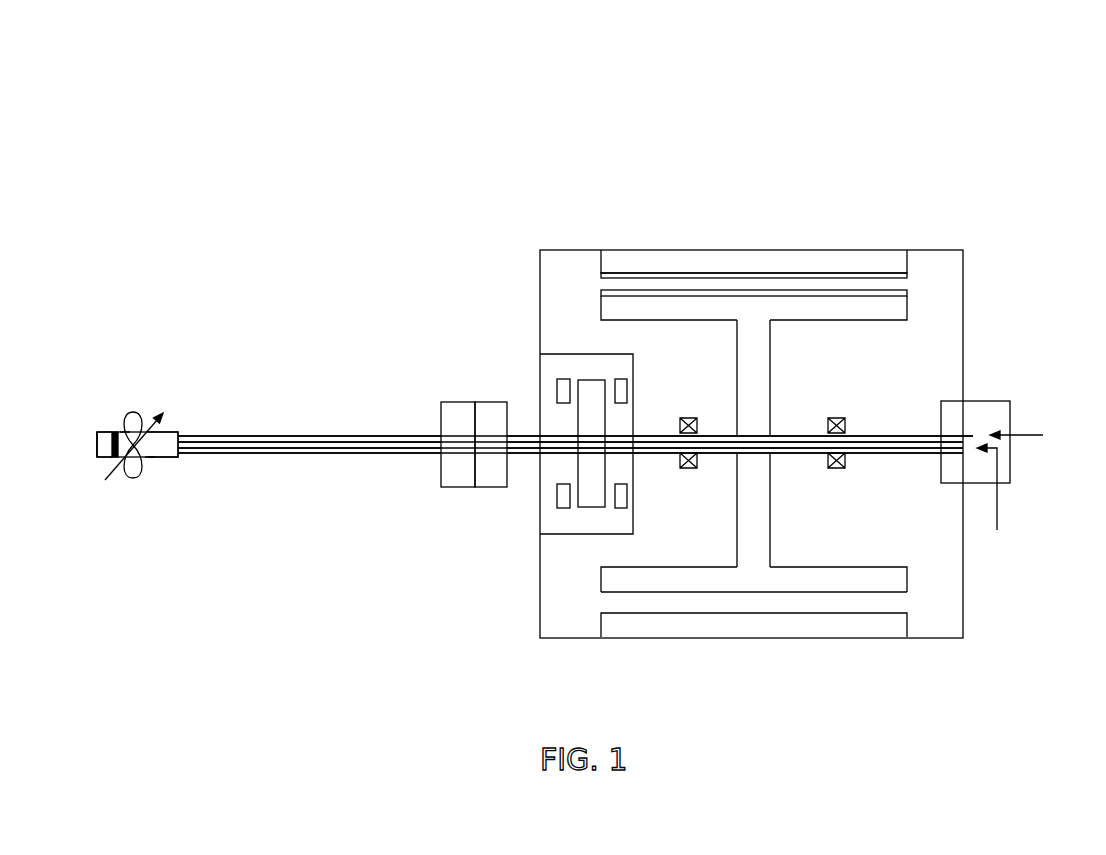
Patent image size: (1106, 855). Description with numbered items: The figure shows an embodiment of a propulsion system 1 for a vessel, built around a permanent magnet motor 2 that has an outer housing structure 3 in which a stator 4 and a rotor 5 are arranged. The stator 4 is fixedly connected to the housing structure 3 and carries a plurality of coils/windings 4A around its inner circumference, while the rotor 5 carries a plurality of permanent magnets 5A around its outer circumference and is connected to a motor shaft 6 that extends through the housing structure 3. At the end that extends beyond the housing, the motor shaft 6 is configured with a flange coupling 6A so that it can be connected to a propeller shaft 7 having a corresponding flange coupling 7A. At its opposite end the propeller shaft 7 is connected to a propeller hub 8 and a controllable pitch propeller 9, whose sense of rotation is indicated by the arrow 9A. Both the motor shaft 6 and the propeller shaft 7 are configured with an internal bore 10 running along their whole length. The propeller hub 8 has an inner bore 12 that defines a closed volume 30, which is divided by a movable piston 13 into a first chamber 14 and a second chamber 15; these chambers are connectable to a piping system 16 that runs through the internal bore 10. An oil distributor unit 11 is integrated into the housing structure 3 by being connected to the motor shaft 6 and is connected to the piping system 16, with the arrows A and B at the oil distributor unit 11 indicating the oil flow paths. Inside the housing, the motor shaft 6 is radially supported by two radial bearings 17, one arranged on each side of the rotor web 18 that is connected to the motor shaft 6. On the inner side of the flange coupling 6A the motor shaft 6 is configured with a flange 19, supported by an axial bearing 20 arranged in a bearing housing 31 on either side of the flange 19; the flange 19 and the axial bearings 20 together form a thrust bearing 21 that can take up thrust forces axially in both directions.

The propulsion system 1 is at (418, 104).
The permanent magnet motor 2 is at (792, 232).
The housing structure 3 is at (566, 648).
The stator 4 is at (633, 260).
The coils/windings 4A is at (907, 276).
The rotor 5 is at (800, 580).
The permanent magnets 5A is at (907, 292).
The motor shaft 6 is at (888, 434).
The flange coupling 6A is at (492, 402).
The propeller shaft 7 is at (320, 435).
The flange coupling 7A is at (458, 402).
The propeller hub 8 is at (168, 460).
The controllable pitch propeller 9 is at (137, 479).
The rotation direction arrow 9A is at (138, 412).
The internal bore 10 is at (325, 447).
The oil distributor unit 11 is at (1010, 412).
The inner bore 12 is at (167, 437).
The movable piston 13 is at (113, 432).
The first chamber 14 is at (102, 457).
The second chamber 15 is at (125, 440).
The piping system 16 is at (262, 452).
The radial bearings 17 is at (688, 416).
The rotor web 18 is at (755, 378).
The flange 19 is at (585, 383).
The axial bearing 20 is at (627, 494).
The thrust bearing 21 is at (520, 350).
The closed volume 30 is at (98, 440).
The bearing housing 31 is at (601, 353).
The direction A is at (992, 503).
The direction B is at (1029, 435).